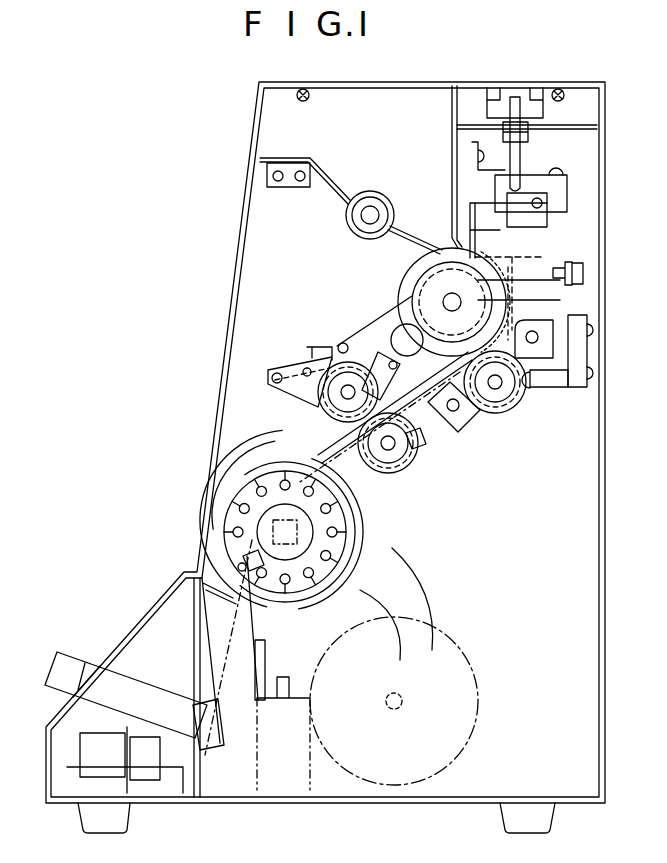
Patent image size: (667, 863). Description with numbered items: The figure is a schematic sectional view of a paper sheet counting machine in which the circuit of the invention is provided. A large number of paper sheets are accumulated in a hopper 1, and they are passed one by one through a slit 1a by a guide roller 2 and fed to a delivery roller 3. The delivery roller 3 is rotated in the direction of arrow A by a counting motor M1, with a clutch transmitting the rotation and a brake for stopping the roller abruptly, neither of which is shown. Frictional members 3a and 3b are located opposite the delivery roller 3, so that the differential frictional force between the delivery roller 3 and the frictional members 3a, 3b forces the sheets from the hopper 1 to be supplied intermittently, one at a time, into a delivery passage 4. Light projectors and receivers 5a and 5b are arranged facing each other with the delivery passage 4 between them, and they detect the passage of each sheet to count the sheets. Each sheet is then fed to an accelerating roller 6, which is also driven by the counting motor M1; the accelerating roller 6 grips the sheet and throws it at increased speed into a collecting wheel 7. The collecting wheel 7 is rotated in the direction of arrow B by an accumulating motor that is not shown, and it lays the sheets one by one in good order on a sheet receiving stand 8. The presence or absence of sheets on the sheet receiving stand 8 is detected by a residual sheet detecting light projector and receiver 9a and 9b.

The hopper 1 is at (419, 136).
The slit 1a is at (446, 232).
The guide roller 2 is at (376, 192).
The delivery roller 3 is at (404, 272).
The frictional member 3a is at (500, 255).
The frictional member 3b is at (510, 298).
The delivery passage 4 is at (470, 385).
The light projector and receiver 5a is at (412, 452).
The light projector and receiver 5b is at (376, 385).
The accelerating roller 6 is at (318, 412).
The collecting wheel 7 is at (226, 456).
The sheet receiving stand 8 is at (160, 690).
The residual sheet detecting light projector and receiver 9a is at (245, 553).
The residual sheet detecting light projector and receiver 9b is at (217, 745).
The direction of rotation of delivery roller A is at (482, 300).
The direction of rotation of collecting wheel B is at (275, 490).
The counting motor M1 is at (478, 705).